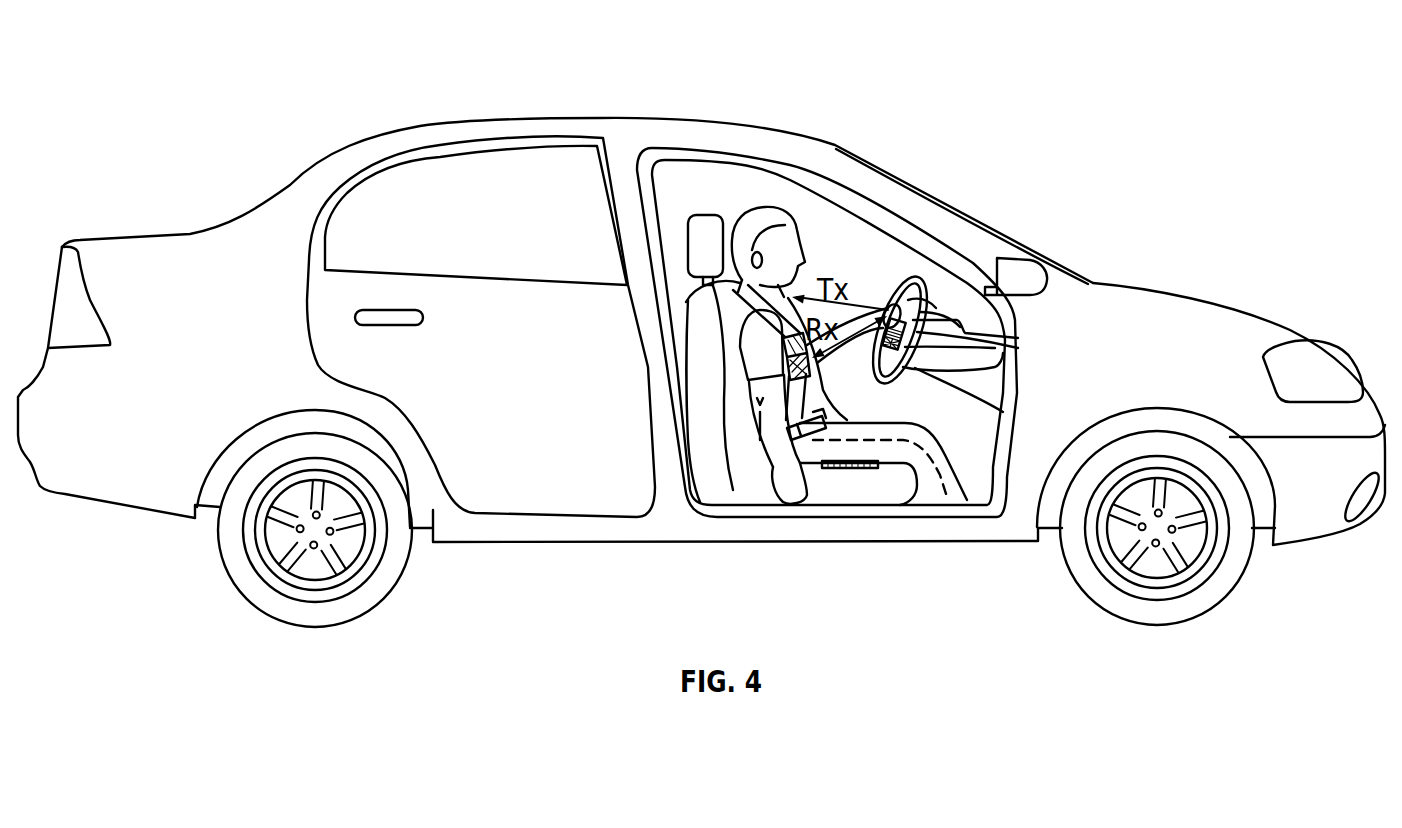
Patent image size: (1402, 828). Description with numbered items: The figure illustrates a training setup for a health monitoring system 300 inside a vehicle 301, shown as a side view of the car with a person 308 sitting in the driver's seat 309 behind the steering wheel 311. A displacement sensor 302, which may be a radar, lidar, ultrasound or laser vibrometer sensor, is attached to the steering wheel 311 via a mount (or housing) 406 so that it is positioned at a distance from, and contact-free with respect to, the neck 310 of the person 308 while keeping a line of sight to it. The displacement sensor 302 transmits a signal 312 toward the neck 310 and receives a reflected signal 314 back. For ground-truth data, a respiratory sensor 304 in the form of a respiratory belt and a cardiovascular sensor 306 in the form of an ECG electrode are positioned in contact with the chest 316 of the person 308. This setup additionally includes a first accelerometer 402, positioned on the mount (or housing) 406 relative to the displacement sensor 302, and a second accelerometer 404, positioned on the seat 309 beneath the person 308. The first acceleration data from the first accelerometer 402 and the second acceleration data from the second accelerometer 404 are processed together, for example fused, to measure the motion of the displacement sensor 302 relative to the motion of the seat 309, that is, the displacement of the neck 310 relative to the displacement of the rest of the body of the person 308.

The health monitoring system 300 is at (868, 245).
The vehicle 301 is at (436, 121).
The displacement sensor 302 is at (908, 322).
The respiratory sensor 304 is at (757, 383).
The cardiovascular sensor 306 is at (780, 327).
The person 308 is at (745, 207).
The seat 309 is at (690, 345).
The neck 310 is at (688, 302).
The steering wheel 311 is at (931, 272).
The signal 312 is at (877, 312).
The reflected signal 314 is at (812, 381).
The chest 316 is at (810, 378).
The first accelerometer 402 is at (906, 348).
The second accelerometer 404 is at (872, 340).
The mount (or housing) 406 is at (908, 334).